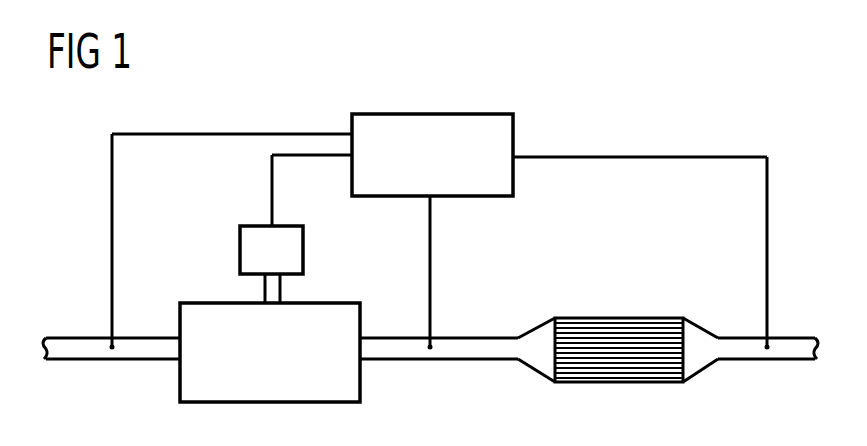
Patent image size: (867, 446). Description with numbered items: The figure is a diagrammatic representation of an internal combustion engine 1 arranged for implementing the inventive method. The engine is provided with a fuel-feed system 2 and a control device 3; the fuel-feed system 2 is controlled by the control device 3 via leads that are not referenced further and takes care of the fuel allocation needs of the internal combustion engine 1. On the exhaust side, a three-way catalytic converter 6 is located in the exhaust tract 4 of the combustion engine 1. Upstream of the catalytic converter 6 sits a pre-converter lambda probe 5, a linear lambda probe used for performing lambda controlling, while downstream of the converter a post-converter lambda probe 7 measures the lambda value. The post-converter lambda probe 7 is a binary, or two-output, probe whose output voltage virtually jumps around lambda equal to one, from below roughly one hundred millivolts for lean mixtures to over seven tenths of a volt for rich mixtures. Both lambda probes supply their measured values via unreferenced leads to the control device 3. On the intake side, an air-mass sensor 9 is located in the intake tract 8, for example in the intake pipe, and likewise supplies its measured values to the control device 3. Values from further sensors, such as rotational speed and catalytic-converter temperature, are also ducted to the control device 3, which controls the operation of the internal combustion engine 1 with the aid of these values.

The internal combustion engine 1 is at (326, 303).
The fuel-feed system 2 is at (240, 250).
The control device 3 is at (435, 114).
The exhaust tract 4 is at (396, 355).
The pre-converter lambda probe 5 is at (432, 347).
The 3-way catalytic converter 6 is at (617, 318).
The post-converter lambda probe 7 is at (770, 348).
The intake tract 8 is at (68, 352).
The air-mass sensor 9 is at (112, 348).